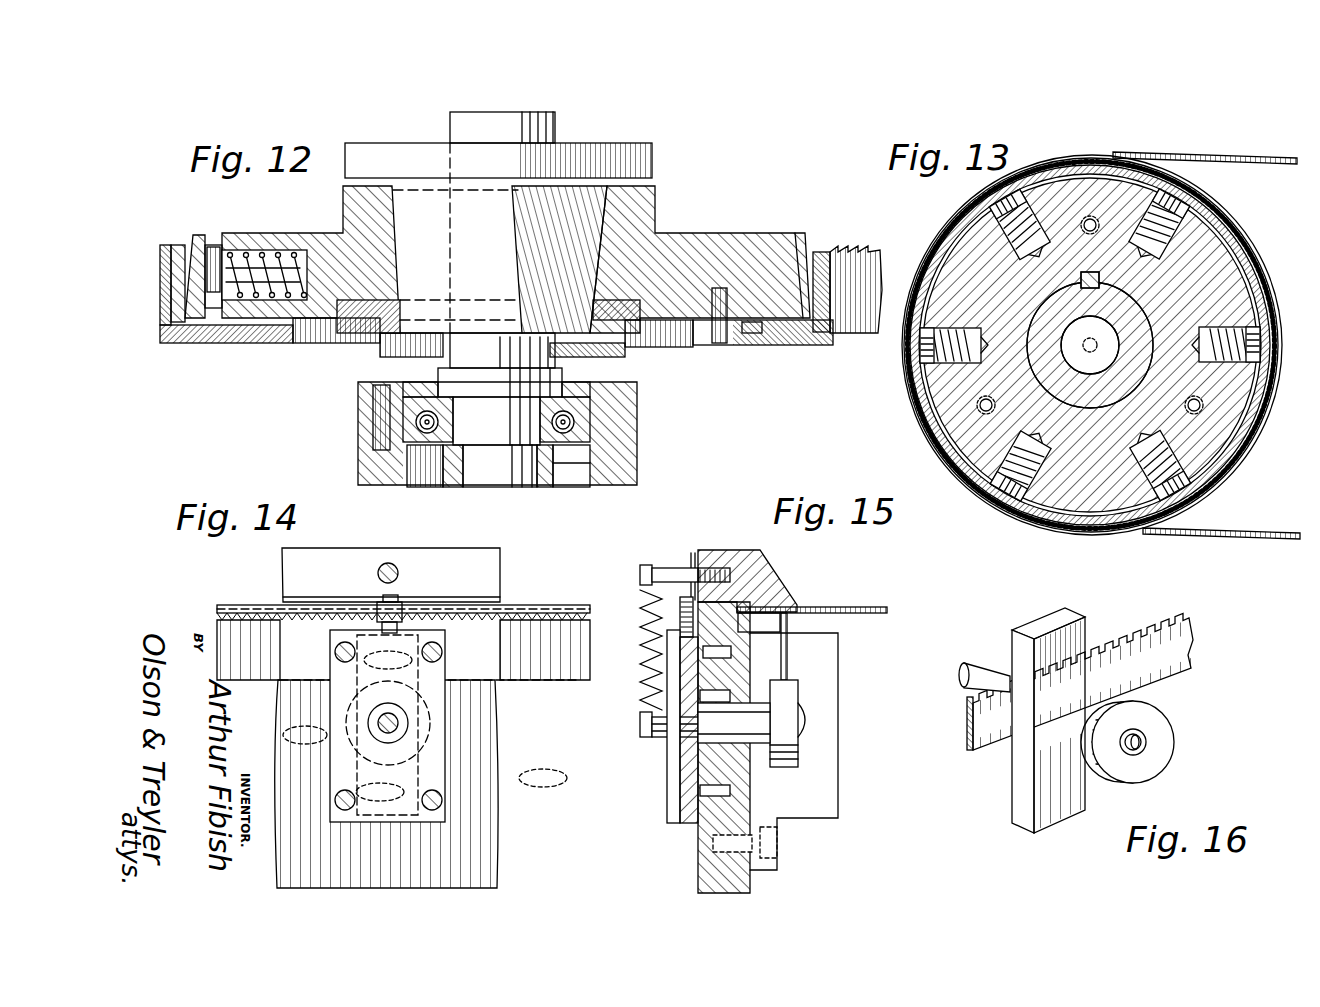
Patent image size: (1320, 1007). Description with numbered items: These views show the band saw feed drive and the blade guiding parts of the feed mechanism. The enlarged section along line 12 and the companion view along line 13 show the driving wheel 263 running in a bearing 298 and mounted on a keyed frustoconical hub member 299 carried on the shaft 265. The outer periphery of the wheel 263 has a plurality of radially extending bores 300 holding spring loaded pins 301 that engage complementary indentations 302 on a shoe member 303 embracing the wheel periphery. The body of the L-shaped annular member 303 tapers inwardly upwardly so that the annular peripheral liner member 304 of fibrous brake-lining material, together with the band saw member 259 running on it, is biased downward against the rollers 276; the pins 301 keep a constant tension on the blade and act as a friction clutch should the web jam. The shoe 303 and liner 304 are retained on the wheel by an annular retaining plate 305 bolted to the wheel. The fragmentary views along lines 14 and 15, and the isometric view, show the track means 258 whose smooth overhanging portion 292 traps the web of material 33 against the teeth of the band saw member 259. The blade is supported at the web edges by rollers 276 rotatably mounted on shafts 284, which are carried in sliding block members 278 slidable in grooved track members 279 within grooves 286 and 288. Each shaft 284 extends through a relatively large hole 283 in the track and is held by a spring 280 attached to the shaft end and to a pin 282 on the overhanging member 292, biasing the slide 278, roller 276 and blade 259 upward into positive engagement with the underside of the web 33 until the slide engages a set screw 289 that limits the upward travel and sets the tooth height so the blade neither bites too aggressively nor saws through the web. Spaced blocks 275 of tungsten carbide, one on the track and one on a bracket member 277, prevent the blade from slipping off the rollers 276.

In FIG. 12, the section line 12— 12 is at (885, 330).
In FIG. 13, the section line 12— 12 is at (857, 345).
In FIG. 12, the section line 13— 13 is at (165, 250).
In FIG. 15, the section line 14— 14 is at (682, 523).
In FIG. 14, the section line 15— 15 is at (360, 522).
In FIG. 14, the web of material 33 is at (538, 607).
In FIG. 15, the web of material 33 is at (864, 610).
In FIG. 14, the track means 258 is at (567, 840).
In FIG. 15, the track means 258 is at (833, 838).
In FIG. 12, the band saw member 259 is at (882, 251).
In FIG. 13, the band saw member 259 is at (1262, 536).
In FIG. 14, the band saw member 259 is at (578, 684).
In FIG. 15, the band saw member 259 is at (790, 650).
In FIG. 16, the band saw member 259 is at (1188, 661).
In FIG. 12, the driving wheel 263 is at (721, 247).
In FIG. 13, the driving wheel 263 is at (1107, 345).
In FIG. 12, the shaft 265 is at (556, 128).
In FIG. 13, the shaft 265 is at (1066, 388).
In FIG. 15, the spaced blocks 275 is at (772, 652).
In FIG. 15, the rollers 276 is at (798, 755).
In FIG. 16, the rollers 276 is at (1162, 733).
In FIG. 15, the bracket member 277 is at (827, 801).
In FIG. 14, the sliding block member 278 is at (408, 778).
In FIG. 15, the sliding block member 278 is at (680, 778).
In FIG. 16, the sliding block member 278 is at (1083, 628).
In FIG. 14, the grooved track member 279 is at (442, 706).
In FIG. 15, the grooved track member 279 is at (670, 764).
In FIG. 15, the spring 280 is at (641, 664).
In FIG. 14, the pin 282 is at (377, 576).
In FIG. 15, the pin 282 is at (661, 571).
In FIG. 14, the hole 283 is at (352, 736).
In FIG. 15, the hole 283 is at (724, 749).
In FIG. 14, the shaft 284 is at (383, 722).
In FIG. 15, the shaft 284 is at (636, 718).
In FIG. 16, the shaft 284 is at (988, 673).
In FIG. 14, the groove 286 is at (388, 660).
In FIG. 14, the groove 288 is at (380, 792).
In FIG. 14, the set screw 289 is at (402, 608).
In FIG. 15, the set screw 289 is at (690, 555).
In FIG. 15, the smooth overhanging portion 292 is at (773, 563).
In FIG. 12, the bearing 298 is at (705, 418).
In FIG. 12, the frustoconical hub member 299 is at (590, 213).
In FIG. 13, the frustoconical hub member 299 is at (1137, 313).
In FIG. 12, the radially extending bores 300 is at (312, 249).
In FIG. 13, the radially extending bores 300 is at (1010, 463).
In FIG. 12, the spring loaded pins 301 is at (220, 255).
In FIG. 13, the spring loaded pins 301 is at (1076, 352).
In FIG. 12, the indentations 302 is at (203, 231).
In FIG. 13, the indentations 302 is at (1216, 210).
In FIG. 12, the shoe member 303 is at (805, 231).
In FIG. 13, the shoe member 303 is at (1236, 236).
In FIG. 12, the annular peripheral liner member 304 is at (824, 336).
In FIG. 13, the annular peripheral liner member 304 is at (1202, 487).
In FIG. 12, the annular retaining plate 305 is at (257, 346).